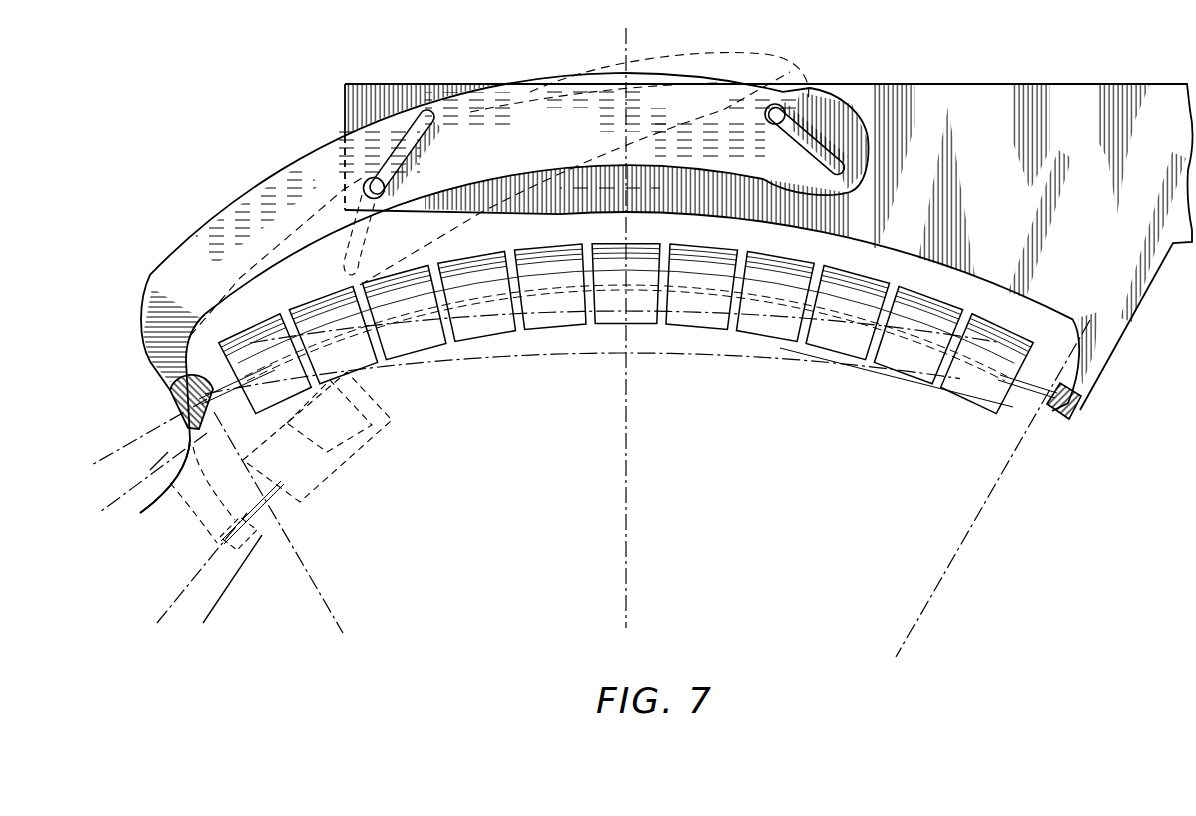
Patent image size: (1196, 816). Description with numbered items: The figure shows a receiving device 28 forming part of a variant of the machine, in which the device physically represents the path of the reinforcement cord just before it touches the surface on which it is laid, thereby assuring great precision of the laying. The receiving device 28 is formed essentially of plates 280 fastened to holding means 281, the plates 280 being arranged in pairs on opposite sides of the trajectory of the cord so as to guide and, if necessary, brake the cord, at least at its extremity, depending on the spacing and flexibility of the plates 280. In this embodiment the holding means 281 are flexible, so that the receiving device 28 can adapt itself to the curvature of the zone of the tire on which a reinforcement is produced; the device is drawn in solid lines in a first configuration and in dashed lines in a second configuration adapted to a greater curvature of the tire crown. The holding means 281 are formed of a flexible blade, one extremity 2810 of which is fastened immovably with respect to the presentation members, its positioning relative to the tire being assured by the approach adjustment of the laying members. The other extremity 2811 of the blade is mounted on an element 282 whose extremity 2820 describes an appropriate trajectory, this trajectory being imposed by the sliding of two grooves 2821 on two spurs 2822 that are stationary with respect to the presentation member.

The receiving device 28 is at (263, 115).
The plates 280 is at (910, 358).
The holding means 281 is at (1012, 408).
The extremity of the blade 2810 is at (1066, 420).
The other extremity of the blade 2811 is at (172, 400).
The element 282 is at (212, 226).
The extremity of the element 2820 is at (148, 493).
The grooves 2821 is at (838, 176).
The spurs 2822 is at (781, 109).